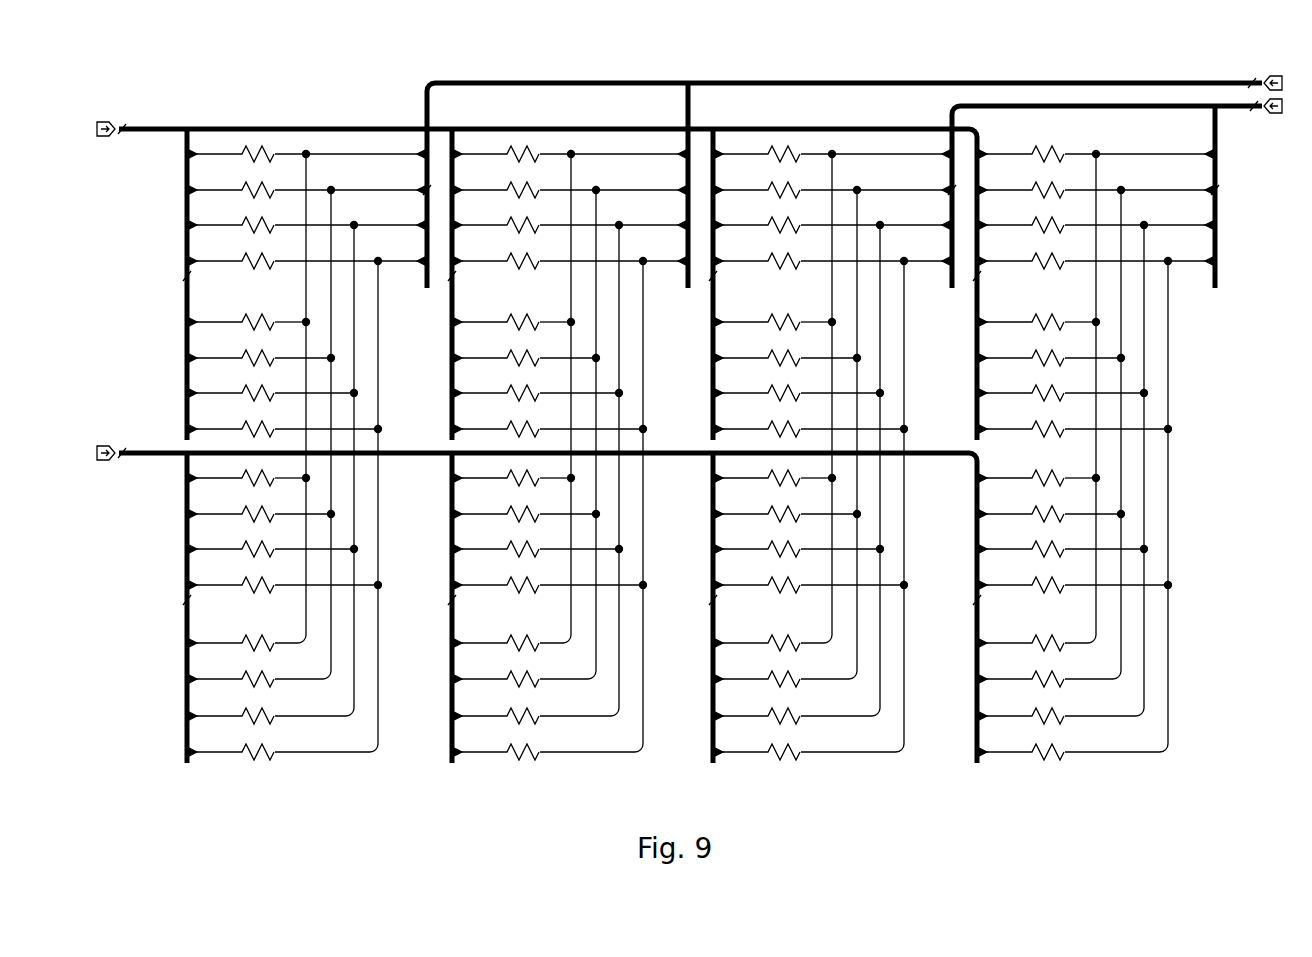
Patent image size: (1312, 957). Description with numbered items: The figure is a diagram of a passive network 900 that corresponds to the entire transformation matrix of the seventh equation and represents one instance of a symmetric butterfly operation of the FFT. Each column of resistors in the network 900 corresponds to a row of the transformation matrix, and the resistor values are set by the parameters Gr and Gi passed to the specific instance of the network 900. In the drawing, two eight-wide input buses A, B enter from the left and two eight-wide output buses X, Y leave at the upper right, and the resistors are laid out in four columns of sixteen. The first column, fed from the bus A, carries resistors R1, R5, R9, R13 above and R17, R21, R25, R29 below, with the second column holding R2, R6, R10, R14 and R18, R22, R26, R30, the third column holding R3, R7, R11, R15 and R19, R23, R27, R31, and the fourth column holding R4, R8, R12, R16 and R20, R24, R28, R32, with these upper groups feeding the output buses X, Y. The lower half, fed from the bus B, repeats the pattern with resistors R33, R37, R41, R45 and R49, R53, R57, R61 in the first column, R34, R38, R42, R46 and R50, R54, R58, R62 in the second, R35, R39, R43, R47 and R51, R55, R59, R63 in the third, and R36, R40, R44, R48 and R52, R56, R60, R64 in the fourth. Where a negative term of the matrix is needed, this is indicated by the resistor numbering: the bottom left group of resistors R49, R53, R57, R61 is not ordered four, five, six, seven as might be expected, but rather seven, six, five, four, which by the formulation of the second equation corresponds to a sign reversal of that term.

The passive network 900 is at (687, 415).
The input bus A is at (95, 129).
The input bus B is at (95, 453).
The output bus X is at (1282, 83).
The output bus Y is at (1281, 106).
The resistor R1 is at (307, 148).
The resistor R2 is at (570, 148).
The resistor R3 is at (832, 148).
The resistor R4 is at (1096, 148).
The resistor R5 is at (307, 184).
The resistor R6 is at (570, 184).
The resistor R7 is at (832, 184).
The resistor R8 is at (1096, 184).
The resistor R9 is at (307, 219).
The resistor R10 is at (570, 219).
The resistor R11 is at (832, 219).
The resistor R12 is at (1096, 219).
The resistor R13 is at (307, 255).
The resistor R14 is at (570, 255).
The resistor R15 is at (832, 255).
The resistor R16 is at (1096, 255).
The resistor R17 is at (248, 316).
The resistor R18 is at (513, 316).
The resistor R19 is at (774, 316).
The resistor R20 is at (1038, 316).
The resistor R21 is at (261, 352).
The resistor R22 is at (526, 352).
The resistor R23 is at (787, 352).
The resistor R24 is at (1051, 352).
The resistor R25 is at (272, 387).
The resistor R26 is at (537, 387).
The resistor R27 is at (798, 387).
The resistor R28 is at (1062, 387).
The resistor R29 is at (284, 423).
The resistor R30 is at (549, 423).
The resistor R31 is at (810, 423).
The resistor R32 is at (1074, 423).
The resistor R33 is at (248, 472).
The resistor R34 is at (513, 472).
The resistor R35 is at (774, 472).
The resistor R36 is at (1038, 472).
The resistor R37 is at (261, 508).
The resistor R38 is at (526, 508).
The resistor R39 is at (787, 508).
The resistor R40 is at (1051, 508).
The resistor R41 is at (272, 543).
The resistor R42 is at (537, 543).
The resistor R43 is at (798, 543).
The resistor R44 is at (1062, 543).
The resistor R45 is at (284, 579).
The resistor R46 is at (549, 579).
The resistor R47 is at (810, 579).
The resistor R48 is at (1074, 579).
The resistor R49 is at (246, 402).
The resistor R50 is at (511, 402).
The resistor R51 is at (772, 402).
The resistor R52 is at (1036, 402).
The resistor R53 is at (259, 438).
The resistor R54 is at (524, 438).
The resistor R55 is at (785, 438).
The resistor R56 is at (1049, 438).
The resistor R57 is at (270, 474).
The resistor R58 is at (535, 474).
The resistor R59 is at (796, 474).
The resistor R60 is at (1060, 474).
The resistor R61 is at (282, 510).
The resistor R62 is at (547, 510).
The resistor R63 is at (808, 510).
The resistor R64 is at (1072, 510).